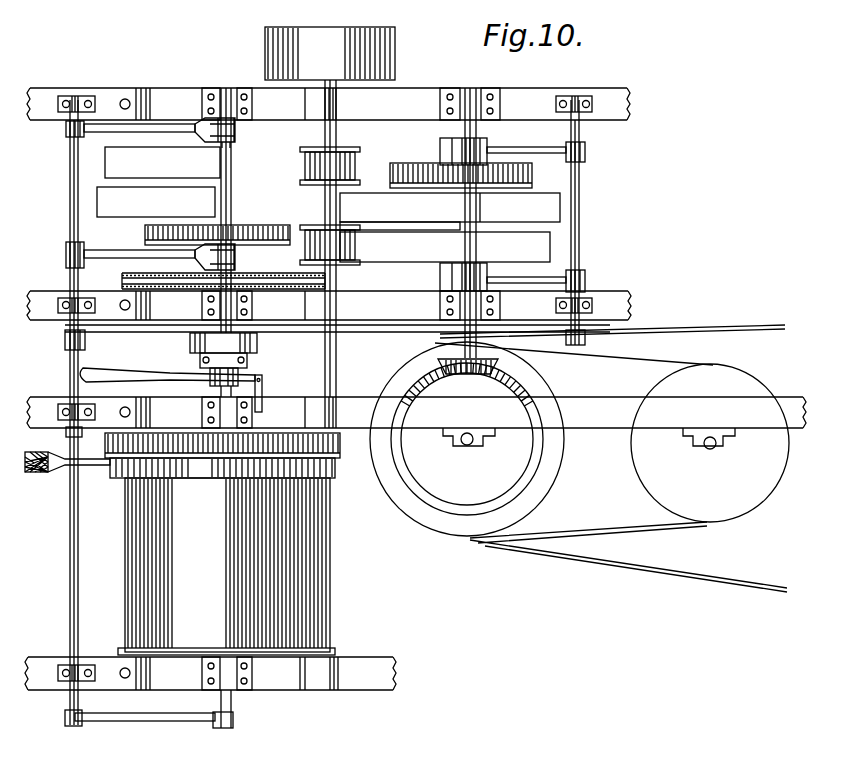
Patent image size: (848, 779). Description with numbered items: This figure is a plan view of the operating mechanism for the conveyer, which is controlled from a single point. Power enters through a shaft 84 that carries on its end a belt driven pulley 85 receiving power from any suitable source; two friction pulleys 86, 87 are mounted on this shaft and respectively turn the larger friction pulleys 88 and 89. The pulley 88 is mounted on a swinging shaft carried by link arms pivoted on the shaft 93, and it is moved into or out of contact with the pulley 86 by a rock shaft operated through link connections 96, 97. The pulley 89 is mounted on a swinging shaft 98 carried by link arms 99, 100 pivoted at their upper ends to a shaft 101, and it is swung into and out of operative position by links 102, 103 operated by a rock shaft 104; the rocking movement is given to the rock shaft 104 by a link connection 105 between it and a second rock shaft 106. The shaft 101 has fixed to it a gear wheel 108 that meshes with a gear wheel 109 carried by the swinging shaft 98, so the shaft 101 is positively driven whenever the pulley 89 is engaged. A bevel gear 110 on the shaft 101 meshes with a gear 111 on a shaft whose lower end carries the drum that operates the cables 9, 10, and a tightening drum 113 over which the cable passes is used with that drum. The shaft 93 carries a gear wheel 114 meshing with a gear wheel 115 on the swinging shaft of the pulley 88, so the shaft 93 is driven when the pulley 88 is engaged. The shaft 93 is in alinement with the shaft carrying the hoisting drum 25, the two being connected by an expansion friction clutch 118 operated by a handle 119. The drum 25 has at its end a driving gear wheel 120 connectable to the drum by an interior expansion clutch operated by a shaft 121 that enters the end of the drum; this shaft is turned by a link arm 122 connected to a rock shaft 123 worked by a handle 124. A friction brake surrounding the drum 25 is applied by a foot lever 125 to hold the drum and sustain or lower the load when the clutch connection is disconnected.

The cable 9 is at (640, 572).
The cable 10 is at (685, 317).
The drum 25 is at (125, 552).
The shaft 84 is at (336, 130).
The belt driven pulley 85 is at (395, 50).
The friction pulley 86 is at (355, 165).
The friction pulley 87 is at (360, 245).
The friction pulley 88 is at (260, 158).
The friction pulley 89 is at (445, 247).
The shaft 93 is at (231, 160).
The link connection 96 is at (95, 138).
The link connection 97 is at (107, 244).
The swinging shaft 98 is at (440, 262).
The link arm 99 is at (440, 147).
The link arm 100 is at (440, 282).
The shaft 101 is at (476, 200).
The link 102 is at (530, 153).
The link 103 is at (530, 277).
The rock shaft 104 is at (579, 235).
The link connection 105 is at (360, 333).
The rock shaft 106 is at (65, 360).
The gear wheel 108 is at (532, 176).
The gear wheel 109 is at (390, 183).
The bevel gear 110 is at (495, 361).
The gear 111 is at (520, 383).
The tightening drum 113 is at (700, 377).
The gear wheel 114 is at (255, 246).
The gear wheel 115 is at (165, 212).
The expansion friction clutch 118 is at (190, 340).
The handle 119 is at (135, 362).
The driving gear wheel 120 is at (110, 440).
The shaft 121 is at (233, 700).
The link arm 122 is at (140, 722).
The rock shaft 123 is at (70, 565).
The handle 124 is at (66, 432).
The foot lever 125 is at (45, 474).